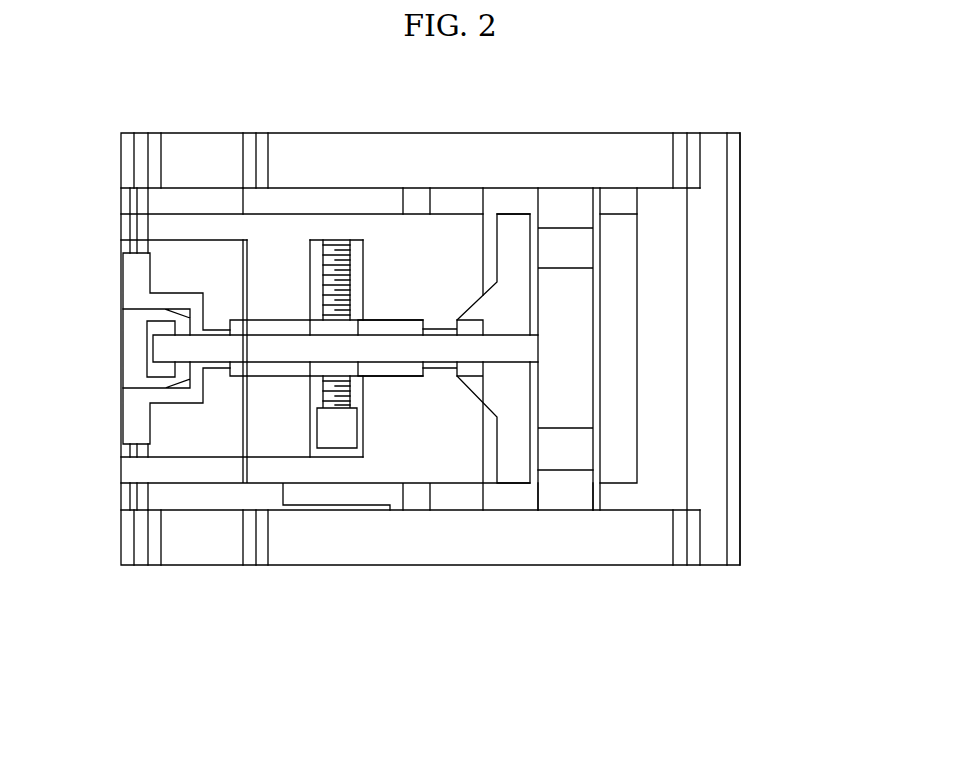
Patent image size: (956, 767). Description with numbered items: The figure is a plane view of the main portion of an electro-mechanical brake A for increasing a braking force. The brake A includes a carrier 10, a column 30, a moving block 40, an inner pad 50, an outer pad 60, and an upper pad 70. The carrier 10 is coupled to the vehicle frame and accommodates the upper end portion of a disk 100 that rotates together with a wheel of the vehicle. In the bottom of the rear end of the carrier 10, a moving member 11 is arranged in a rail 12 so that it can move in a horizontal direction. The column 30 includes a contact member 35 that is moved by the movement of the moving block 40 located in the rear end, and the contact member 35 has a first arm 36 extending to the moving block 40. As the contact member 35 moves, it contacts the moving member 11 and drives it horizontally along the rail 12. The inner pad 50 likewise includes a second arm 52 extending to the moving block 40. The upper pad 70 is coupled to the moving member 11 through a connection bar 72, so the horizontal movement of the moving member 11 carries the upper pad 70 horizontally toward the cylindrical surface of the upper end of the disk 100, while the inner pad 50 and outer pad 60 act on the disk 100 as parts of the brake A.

The carrier 10 is at (357, 566).
The moving member 11 is at (138, 357).
The rail 12 is at (133, 499).
The column 30 is at (462, 217).
The contact member 35 is at (138, 268).
The first arm 36 is at (275, 330).
The moving block 40 is at (333, 319).
The inner pad 50 is at (502, 488).
The second arm 52 is at (400, 330).
The outer pad 60 is at (642, 273).
The upper pad 70 is at (584, 363).
The connection bar 72 is at (225, 345).
The disk 100 is at (573, 496).
The electro-mechanical brake A is at (752, 487).